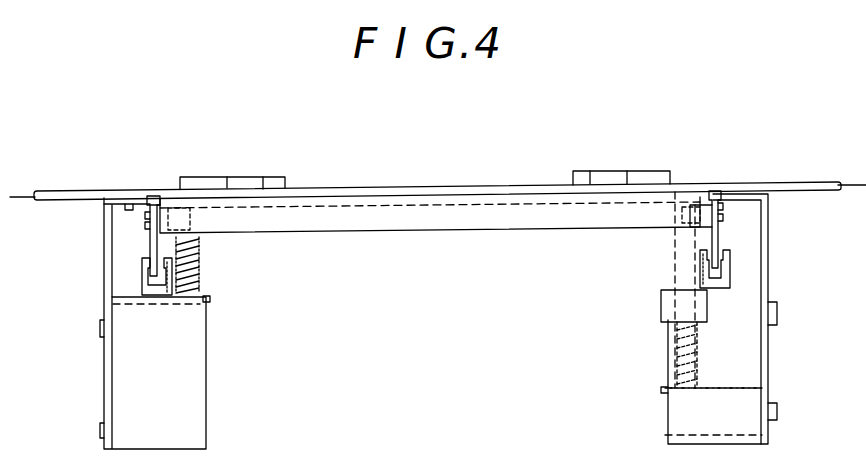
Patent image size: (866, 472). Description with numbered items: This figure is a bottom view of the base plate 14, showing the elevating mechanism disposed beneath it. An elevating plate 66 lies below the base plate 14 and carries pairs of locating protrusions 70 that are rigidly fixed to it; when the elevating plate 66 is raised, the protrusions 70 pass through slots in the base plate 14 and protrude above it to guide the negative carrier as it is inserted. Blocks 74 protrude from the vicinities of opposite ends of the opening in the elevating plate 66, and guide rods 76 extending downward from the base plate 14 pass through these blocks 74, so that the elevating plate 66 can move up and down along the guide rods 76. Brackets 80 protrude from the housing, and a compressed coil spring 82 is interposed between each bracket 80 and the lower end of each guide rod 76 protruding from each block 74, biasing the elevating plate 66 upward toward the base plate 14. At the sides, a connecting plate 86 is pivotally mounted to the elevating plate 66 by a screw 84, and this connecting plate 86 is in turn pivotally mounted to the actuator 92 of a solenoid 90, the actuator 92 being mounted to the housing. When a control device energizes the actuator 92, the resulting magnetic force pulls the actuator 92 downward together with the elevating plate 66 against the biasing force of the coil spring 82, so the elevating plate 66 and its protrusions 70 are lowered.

The base plate 14 is at (462, 186).
The locating protrusions 70 is at (243, 177).
The elevating plate 66 is at (495, 231).
The screw 84 is at (153, 206).
The connecting plate 86 is at (152, 251).
The actuator 92 is at (143, 290).
The compressed coil spring 82 is at (200, 263).
The solenoid 90 is at (197, 366).
The blocks 74 is at (660, 251).
The guide rods 76 is at (663, 282).
The brackets 80 is at (712, 389).